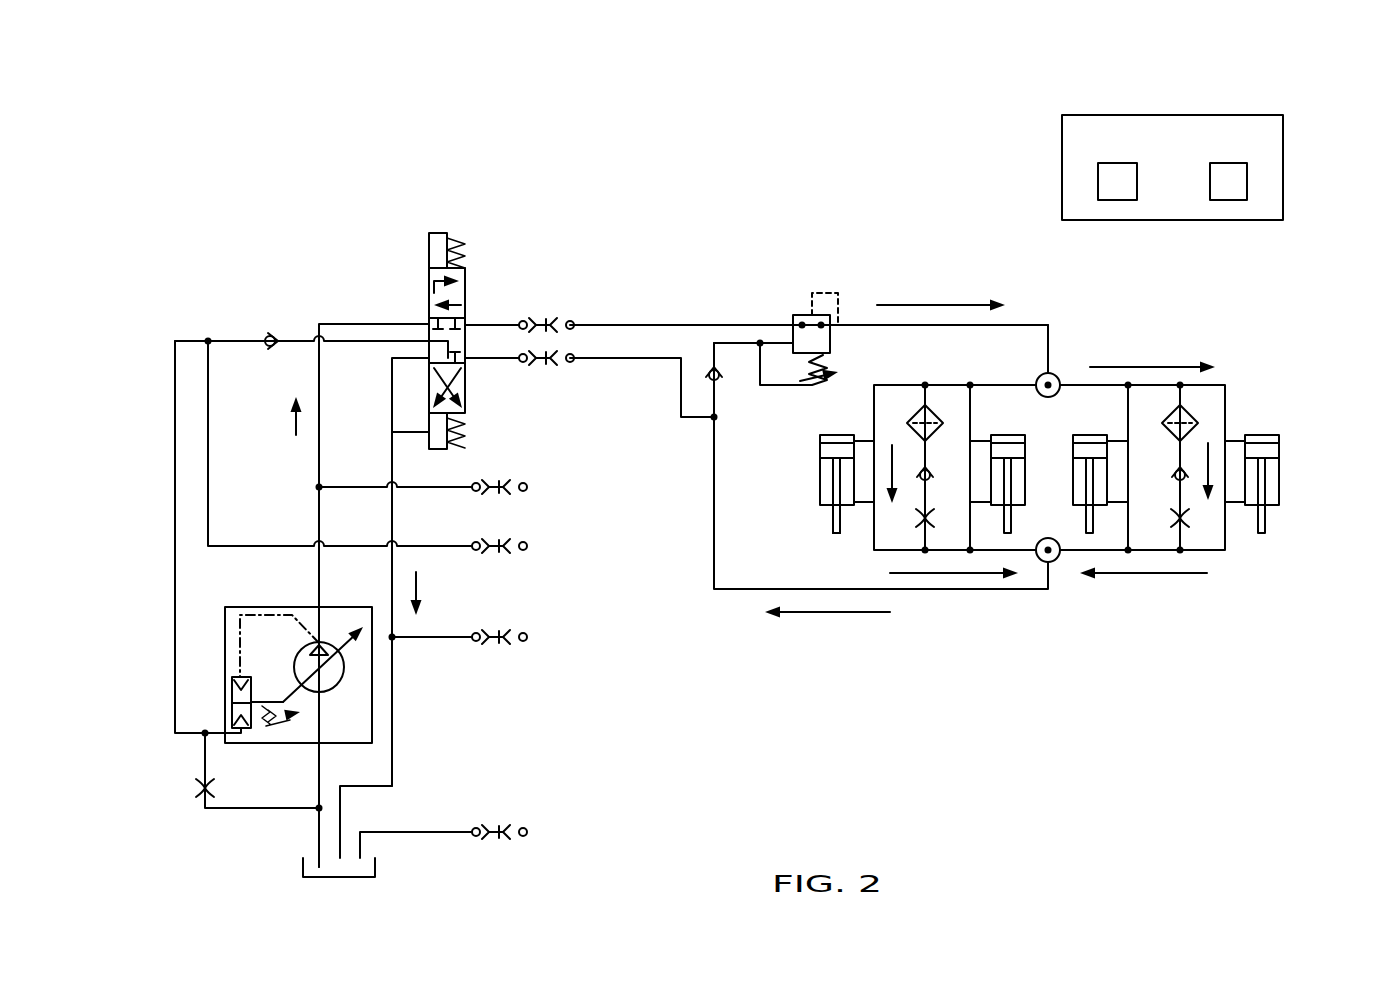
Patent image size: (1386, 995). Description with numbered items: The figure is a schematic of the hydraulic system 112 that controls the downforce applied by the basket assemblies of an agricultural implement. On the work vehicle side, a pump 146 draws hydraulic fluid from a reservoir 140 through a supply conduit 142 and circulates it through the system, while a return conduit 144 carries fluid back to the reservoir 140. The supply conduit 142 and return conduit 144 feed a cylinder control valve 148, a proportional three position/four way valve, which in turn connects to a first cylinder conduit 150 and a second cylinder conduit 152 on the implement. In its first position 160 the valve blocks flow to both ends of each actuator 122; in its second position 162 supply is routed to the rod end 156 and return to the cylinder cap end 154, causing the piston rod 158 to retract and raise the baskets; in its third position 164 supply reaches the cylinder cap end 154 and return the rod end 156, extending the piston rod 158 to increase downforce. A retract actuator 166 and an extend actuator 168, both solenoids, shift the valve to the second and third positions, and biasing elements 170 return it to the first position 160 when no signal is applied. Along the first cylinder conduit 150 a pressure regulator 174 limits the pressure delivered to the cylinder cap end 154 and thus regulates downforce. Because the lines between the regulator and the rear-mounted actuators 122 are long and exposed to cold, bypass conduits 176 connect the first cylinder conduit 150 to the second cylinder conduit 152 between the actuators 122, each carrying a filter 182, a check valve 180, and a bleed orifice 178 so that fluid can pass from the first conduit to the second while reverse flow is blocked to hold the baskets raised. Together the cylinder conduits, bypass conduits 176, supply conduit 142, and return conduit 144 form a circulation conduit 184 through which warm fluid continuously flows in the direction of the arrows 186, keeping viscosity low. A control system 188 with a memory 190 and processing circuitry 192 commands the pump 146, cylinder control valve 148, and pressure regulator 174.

The hydraulic system 112 is at (346, 194).
The actuator 122 is at (819, 490).
The reservoir 140 is at (350, 878).
The supply conduit 142 is at (317, 782).
The return conduit 144 is at (392, 722).
The pump 146 is at (297, 607).
The cylinder control valve 148 is at (356, 300).
The first cylinder conduit 150 is at (723, 324).
The second cylinder conduit 152 is at (714, 457).
The cylinder cap end 154 is at (841, 420).
The rod end 156 is at (831, 548).
The piston rod 158 is at (833, 518).
The first position 160 is at (420, 330).
The second position 162 is at (466, 388).
The third position 164 is at (466, 289).
The retract actuator 166 is at (392, 432).
The extend actuator 168 is at (435, 250).
The biasing elements 170 is at (466, 247).
The pressure regulator 174 is at (803, 313).
The bypass conduits 176 is at (1183, 532).
The orifice 178 is at (1190, 520).
The check valve 180 is at (1173, 468).
The filter 182 is at (1188, 410).
The circulation conduit 184 is at (688, 472).
The arrows 186 is at (296, 420).
The control system 188 is at (1175, 150).
The memory 190 is at (1098, 178).
The processing circuitry 192 is at (1247, 178).